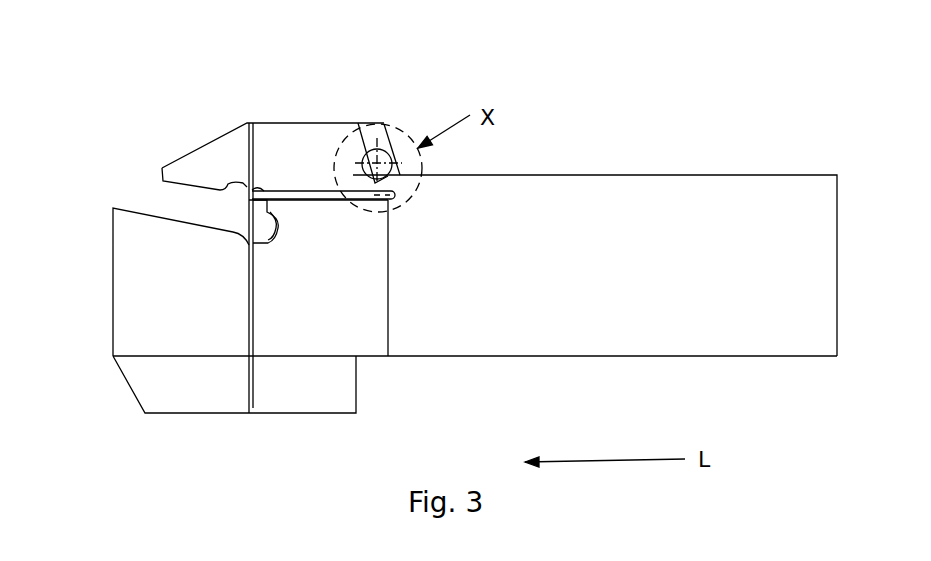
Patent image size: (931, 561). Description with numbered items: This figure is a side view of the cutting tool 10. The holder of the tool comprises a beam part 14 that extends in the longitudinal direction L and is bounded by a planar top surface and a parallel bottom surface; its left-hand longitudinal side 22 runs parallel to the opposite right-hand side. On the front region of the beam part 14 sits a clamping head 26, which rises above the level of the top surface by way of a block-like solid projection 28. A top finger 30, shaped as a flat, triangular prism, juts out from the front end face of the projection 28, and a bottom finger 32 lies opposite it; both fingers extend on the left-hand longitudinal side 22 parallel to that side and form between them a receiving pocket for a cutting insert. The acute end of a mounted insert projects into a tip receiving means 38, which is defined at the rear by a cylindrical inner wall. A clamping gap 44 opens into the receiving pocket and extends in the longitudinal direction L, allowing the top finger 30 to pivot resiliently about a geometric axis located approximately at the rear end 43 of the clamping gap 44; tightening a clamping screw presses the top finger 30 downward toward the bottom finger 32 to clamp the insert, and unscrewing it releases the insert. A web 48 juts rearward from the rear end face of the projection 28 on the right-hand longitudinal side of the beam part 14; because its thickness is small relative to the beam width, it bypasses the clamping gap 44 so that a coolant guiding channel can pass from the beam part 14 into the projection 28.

The cutting tool 10 is at (610, 107).
The beam part 14 is at (690, 174).
The left-hand longitudinal side 22 is at (732, 322).
The clamping head 26 is at (117, 148).
The projection 28 is at (307, 192).
The top finger 30 is at (212, 140).
The bottom finger 32 is at (115, 252).
The tip receiving means 38 is at (267, 243).
The rear end of the clamping gap 43 is at (396, 197).
The clamping gap 44 is at (335, 199).
The web 48 is at (384, 125).